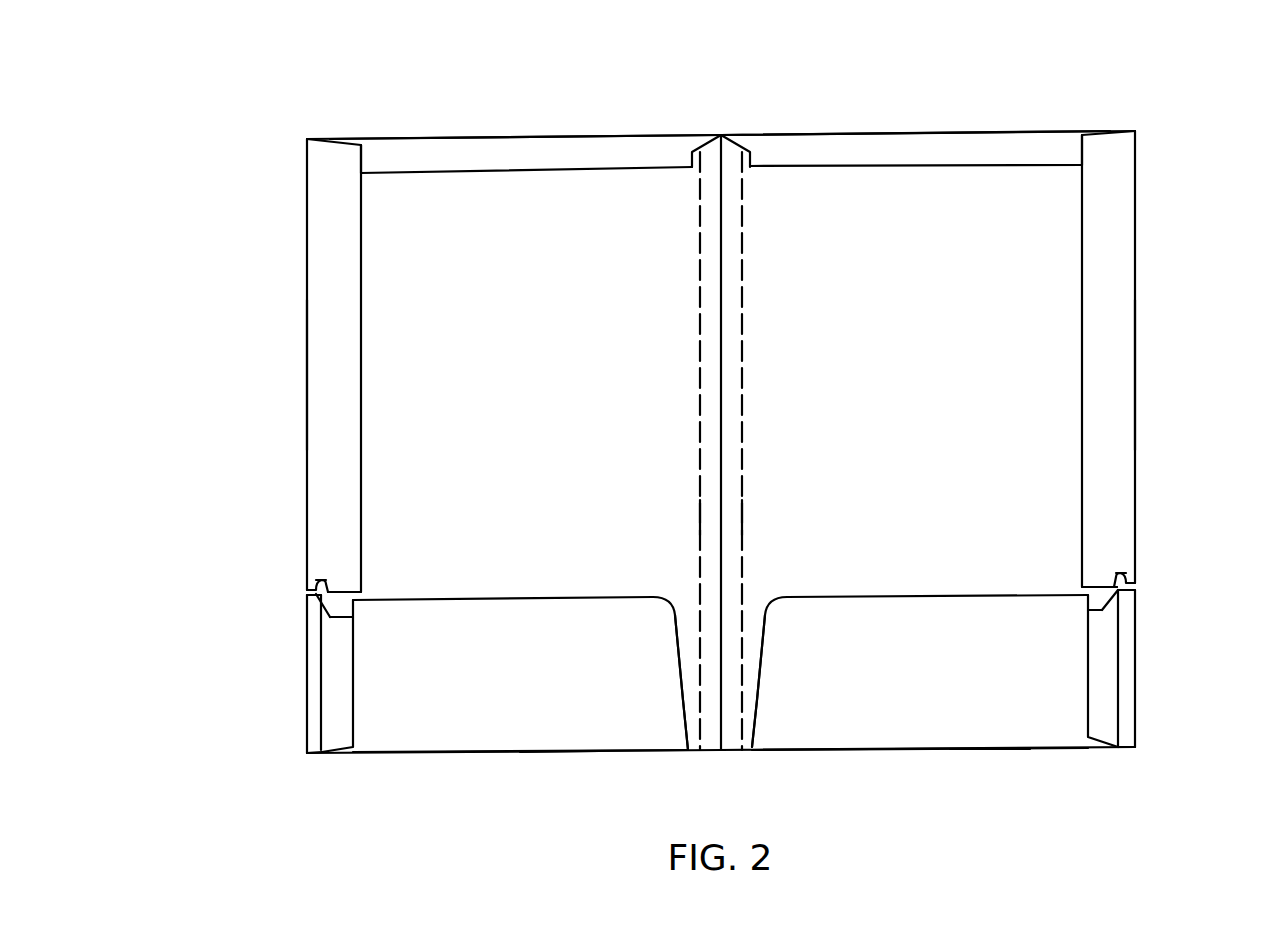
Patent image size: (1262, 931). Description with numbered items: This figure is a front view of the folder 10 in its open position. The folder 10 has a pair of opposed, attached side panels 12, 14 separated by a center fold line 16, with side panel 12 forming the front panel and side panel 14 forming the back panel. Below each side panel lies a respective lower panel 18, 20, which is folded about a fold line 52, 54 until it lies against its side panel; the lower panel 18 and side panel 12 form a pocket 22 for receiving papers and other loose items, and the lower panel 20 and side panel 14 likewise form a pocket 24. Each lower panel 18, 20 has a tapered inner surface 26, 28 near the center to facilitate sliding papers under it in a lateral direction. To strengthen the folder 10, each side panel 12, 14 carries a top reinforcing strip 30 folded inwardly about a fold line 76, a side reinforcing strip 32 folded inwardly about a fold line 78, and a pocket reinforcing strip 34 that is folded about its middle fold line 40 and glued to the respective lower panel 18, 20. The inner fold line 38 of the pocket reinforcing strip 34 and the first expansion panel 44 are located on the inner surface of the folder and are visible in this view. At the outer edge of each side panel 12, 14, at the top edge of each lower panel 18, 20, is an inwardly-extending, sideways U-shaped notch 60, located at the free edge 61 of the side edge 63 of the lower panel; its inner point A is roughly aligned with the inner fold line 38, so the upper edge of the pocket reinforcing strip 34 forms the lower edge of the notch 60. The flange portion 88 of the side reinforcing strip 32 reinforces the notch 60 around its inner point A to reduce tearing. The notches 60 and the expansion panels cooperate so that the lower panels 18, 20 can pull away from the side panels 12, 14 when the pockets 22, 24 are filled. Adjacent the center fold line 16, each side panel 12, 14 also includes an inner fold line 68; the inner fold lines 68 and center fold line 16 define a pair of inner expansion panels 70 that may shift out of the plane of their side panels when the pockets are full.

The folder 10 is at (270, 116).
The side panel 12 is at (508, 180).
The side panel 14 is at (985, 175).
The center fold line 16 is at (722, 212).
The lower panel 18 is at (475, 737).
The lower panel 20 is at (900, 725).
The pocket 22 is at (498, 590).
The pocket 24 is at (955, 577).
The tapered inner surface 26 is at (680, 640).
The tapered inner surface 28 is at (760, 640).
The top reinforcing strip 30 is at (594, 150).
The side reinforcing strip 32 is at (308, 268).
The pocket reinforcing strip 34 is at (345, 700).
The inner fold line 38 is at (321, 685).
The middle fold line 40 is at (307, 728).
The first expansion panel 44 is at (312, 745).
The fold line 52 is at (552, 753).
The fold line 54 is at (992, 750).
The notch 60 is at (298, 580).
The free edge 61 is at (307, 595).
The side edge 63 is at (307, 645).
The inner fold line 68 is at (700, 440).
The inner expansion panel 70 is at (701, 517).
The fold line 76 is at (421, 137).
The fold line 78 is at (307, 385).
The flange portion 88 is at (352, 588).
The inner point A is at (318, 580).